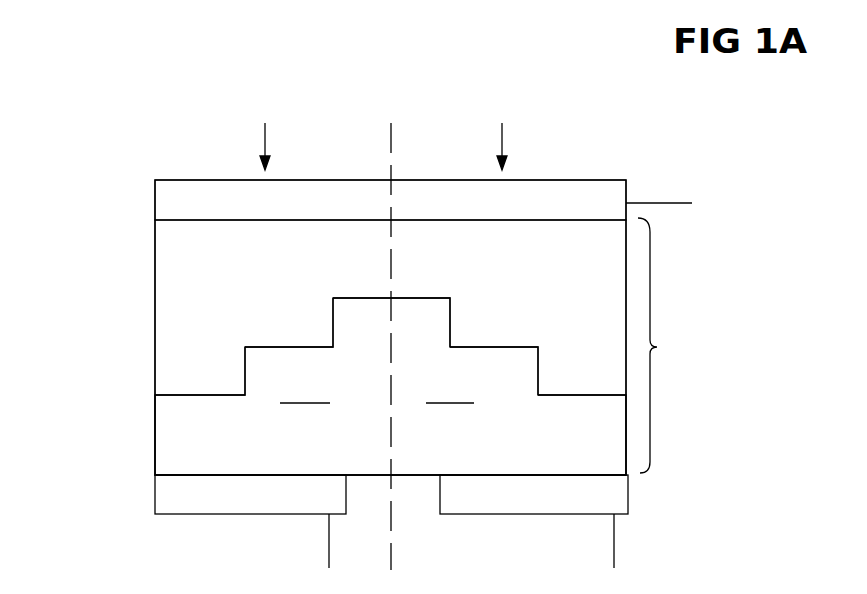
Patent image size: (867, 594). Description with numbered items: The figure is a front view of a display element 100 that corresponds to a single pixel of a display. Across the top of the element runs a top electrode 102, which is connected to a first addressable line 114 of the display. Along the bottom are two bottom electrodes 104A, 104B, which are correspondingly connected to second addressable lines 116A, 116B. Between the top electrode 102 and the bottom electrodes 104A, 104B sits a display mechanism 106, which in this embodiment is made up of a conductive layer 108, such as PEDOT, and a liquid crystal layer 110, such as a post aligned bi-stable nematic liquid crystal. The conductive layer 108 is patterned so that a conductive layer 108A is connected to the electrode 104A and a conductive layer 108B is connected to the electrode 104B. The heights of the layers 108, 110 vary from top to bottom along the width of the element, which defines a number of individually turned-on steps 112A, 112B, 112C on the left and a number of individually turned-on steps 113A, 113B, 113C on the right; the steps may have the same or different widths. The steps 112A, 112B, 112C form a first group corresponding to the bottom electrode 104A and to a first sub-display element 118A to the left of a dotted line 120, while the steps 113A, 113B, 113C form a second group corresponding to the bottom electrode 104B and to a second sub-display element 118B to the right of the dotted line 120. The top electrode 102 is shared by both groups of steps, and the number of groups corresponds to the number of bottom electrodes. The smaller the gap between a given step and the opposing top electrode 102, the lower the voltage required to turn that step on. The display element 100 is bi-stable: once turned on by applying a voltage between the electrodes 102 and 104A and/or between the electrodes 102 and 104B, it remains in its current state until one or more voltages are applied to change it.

The display element 100 is at (116, 130).
The top electrode 102 is at (390, 200).
The bottom electrode 104A is at (158, 497).
The bottom electrode 104B is at (613, 497).
The display mechanism 106 is at (668, 345).
The conductive layer 108 is at (165, 420).
The conductive layer 108A is at (305, 394).
The conductive layer 108B is at (450, 394).
The liquid crystal layer 110 is at (170, 293).
The individually turned-on step 112A is at (188, 395).
The individually turned-on step 112B is at (264, 347).
The individually turned-on step 112C is at (343, 298).
The individually turned-on step 113A is at (607, 354).
The individually turned-on step 113B is at (545, 308).
The individually turned-on step 113C is at (466, 261).
The first addressable line 114 is at (688, 162).
The second addressable line 116A is at (329, 548).
The second addressable line 116B is at (614, 546).
The first sub-display element 118A is at (265, 133).
The second sub-display element 118B is at (500, 133).
The dotted line 120 is at (391, 143).